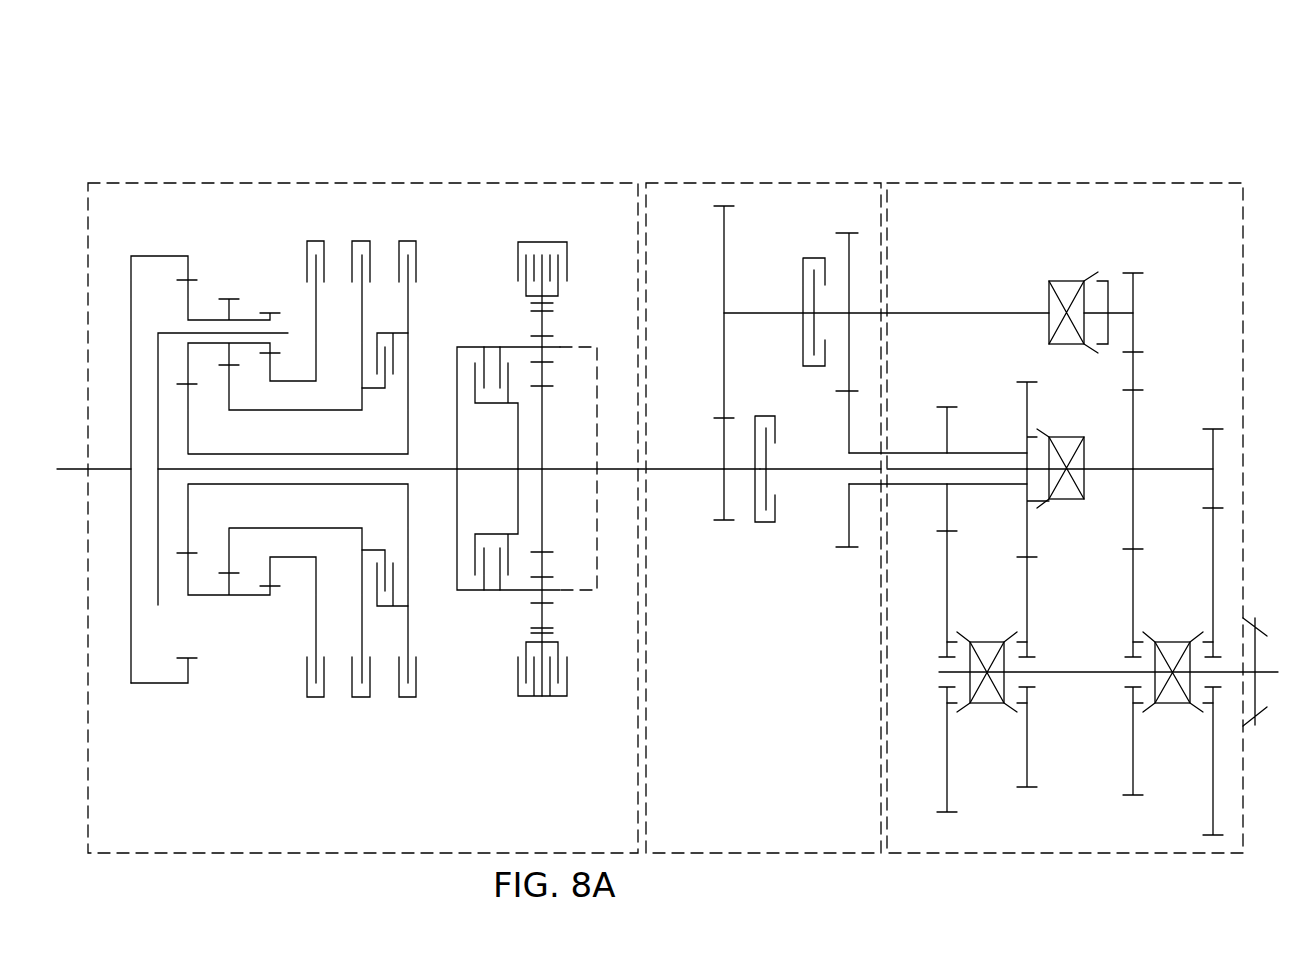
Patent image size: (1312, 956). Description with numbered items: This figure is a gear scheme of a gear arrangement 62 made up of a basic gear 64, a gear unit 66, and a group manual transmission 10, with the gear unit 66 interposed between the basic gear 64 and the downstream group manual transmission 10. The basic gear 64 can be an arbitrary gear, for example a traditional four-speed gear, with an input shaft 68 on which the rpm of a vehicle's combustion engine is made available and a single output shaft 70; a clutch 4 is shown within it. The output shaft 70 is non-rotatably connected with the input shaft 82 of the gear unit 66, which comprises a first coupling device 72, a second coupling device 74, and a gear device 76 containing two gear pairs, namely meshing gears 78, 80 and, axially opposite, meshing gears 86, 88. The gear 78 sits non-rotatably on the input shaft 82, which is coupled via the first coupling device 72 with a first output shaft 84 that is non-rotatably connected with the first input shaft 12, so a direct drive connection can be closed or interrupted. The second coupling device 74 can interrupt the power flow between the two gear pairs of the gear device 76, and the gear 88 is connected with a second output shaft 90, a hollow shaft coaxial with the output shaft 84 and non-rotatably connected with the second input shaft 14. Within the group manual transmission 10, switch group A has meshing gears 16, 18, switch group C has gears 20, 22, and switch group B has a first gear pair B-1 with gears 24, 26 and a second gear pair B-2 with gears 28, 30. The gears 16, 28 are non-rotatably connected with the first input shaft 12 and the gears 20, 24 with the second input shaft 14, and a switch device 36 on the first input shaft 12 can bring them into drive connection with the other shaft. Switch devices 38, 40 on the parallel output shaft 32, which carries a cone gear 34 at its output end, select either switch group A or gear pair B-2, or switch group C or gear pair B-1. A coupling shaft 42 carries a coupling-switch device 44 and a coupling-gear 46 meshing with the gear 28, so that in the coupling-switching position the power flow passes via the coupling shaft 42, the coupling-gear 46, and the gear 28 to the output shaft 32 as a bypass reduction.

The group manual transmission 10 is at (1052, 132).
The first input shaft 12 is at (913, 470).
The second input shaft 14 is at (915, 453).
The gear 16 is at (1213, 457).
The gear 18 is at (1213, 553).
The gear 20 is at (1028, 405).
The gear 22 is at (1027, 585).
The gear 24 is at (948, 427).
The gear 26 is at (948, 562).
The gear 28 is at (1134, 437).
The gear 30 is at (1134, 580).
The output shaft 32 is at (1050, 672).
The cone gear 34 is at (1248, 620).
The switch device 36 is at (1075, 499).
The switch device 38 is at (1168, 642).
The switch device 40 is at (978, 703).
The coupling shaft 42 is at (920, 313).
The coupling-switch device 44 is at (1062, 281).
The coupling-gear 46 is at (1152, 371).
The gear arrangement 62 is at (730, 128).
The basic gear 64 is at (340, 163).
The gear unit 66 is at (810, 156).
The input shaft 68 is at (68, 468).
The output shaft 70 is at (612, 470).
The first coupling device 72 is at (760, 524).
The second coupling device 74 is at (818, 258).
The gear device 76 is at (773, 263).
The gear 78 is at (724, 505).
The gear 80 is at (724, 253).
The input shaft 82 is at (697, 468).
The first output shaft 84 is at (800, 470).
The gear 86 is at (849, 368).
The gear 88 is at (849, 520).
The second output shaft 90 is at (865, 484).
The clutch 4 is at (385, 454).
The switch group A is at (1218, 411).
The switch group B is at (955, 336).
The first gear pair B-1 is at (952, 393).
The second gear pair B-2 is at (1149, 386).
The switch group C is at (1033, 366).